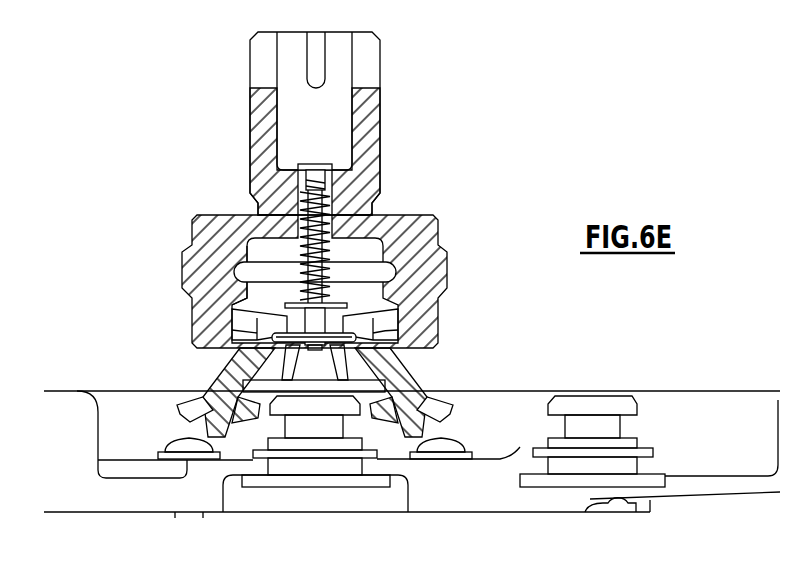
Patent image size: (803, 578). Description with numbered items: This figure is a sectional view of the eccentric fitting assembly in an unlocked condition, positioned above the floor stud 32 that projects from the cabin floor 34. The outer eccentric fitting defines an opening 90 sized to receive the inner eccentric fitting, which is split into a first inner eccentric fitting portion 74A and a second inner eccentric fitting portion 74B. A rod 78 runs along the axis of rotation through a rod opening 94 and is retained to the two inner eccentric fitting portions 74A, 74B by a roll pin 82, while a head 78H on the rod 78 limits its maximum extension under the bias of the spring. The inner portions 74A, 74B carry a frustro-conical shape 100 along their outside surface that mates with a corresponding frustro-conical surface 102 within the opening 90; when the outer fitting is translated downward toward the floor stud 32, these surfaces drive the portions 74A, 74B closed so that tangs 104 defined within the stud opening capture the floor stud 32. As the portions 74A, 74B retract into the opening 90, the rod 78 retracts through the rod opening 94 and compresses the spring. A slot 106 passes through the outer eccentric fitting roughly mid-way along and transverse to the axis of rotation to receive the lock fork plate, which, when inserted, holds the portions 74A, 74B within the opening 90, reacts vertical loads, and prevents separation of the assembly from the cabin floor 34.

The floor stud 32 is at (313, 428).
The cabin floor 34 is at (690, 488).
The first inner eccentric fitting portion 74A is at (212, 374).
The second inner eccentric fitting portion 74B is at (420, 380).
The rod 78 is at (318, 189).
The head 78H is at (317, 166).
The roll pin 82 is at (373, 315).
The opening 90 is at (392, 246).
The rod opening 94 is at (303, 184).
The frustro-conical shape 100 is at (408, 358).
The frustro-conical surface 102 is at (404, 272).
The tangs 104 is at (225, 416).
The slot 106 is at (238, 258).